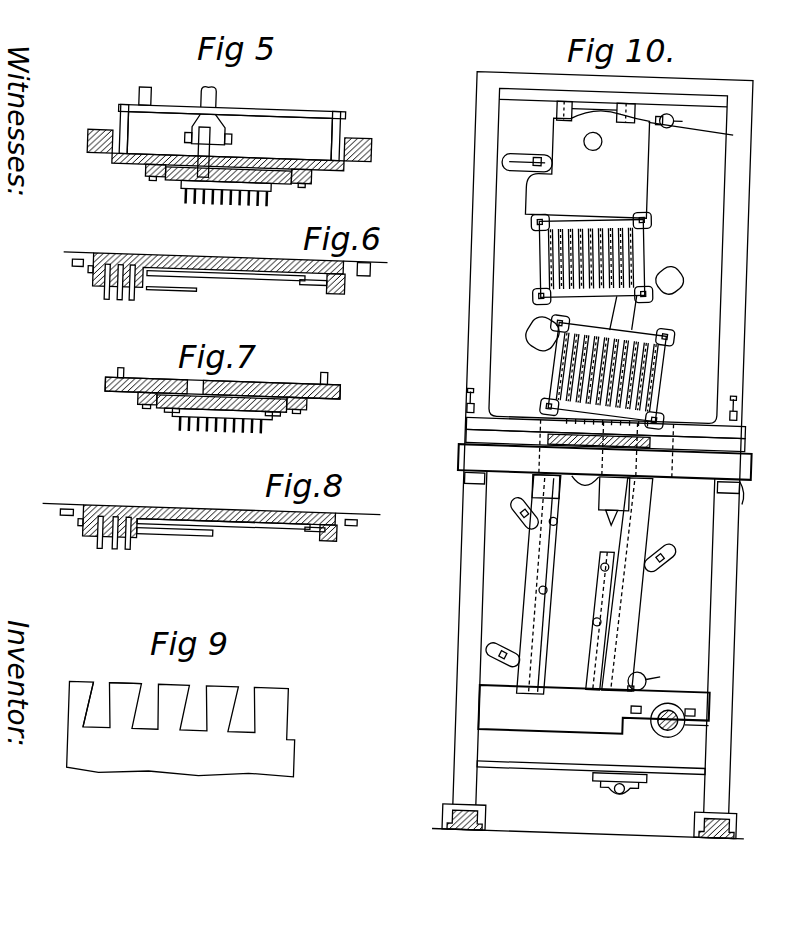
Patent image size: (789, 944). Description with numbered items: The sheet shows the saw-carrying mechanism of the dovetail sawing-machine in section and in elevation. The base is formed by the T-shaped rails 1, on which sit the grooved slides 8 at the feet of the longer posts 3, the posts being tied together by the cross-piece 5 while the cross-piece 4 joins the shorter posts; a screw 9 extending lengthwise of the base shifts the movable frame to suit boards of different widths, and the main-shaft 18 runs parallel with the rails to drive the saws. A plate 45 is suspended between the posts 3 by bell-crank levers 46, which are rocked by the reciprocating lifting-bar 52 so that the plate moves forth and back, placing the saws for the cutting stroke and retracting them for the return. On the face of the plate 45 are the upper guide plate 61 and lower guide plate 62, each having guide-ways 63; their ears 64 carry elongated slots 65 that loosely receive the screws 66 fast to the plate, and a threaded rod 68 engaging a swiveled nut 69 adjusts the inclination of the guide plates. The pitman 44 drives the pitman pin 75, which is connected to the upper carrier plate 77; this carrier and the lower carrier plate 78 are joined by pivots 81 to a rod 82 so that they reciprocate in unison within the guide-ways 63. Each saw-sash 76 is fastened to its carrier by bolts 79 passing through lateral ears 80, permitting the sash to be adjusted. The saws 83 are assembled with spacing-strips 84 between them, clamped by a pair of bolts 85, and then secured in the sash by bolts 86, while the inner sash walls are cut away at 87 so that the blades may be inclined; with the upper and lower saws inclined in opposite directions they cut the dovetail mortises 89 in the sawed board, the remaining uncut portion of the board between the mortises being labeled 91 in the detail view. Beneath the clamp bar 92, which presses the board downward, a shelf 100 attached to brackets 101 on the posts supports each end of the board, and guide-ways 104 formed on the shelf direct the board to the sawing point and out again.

In FIG. 10, the rails 1 is at (470, 832).
In FIG. 5, the longer posts 3 is at (88, 139).
In FIG. 10, the longer posts 3 is at (455, 770).
In FIG. 5, the cross-piece 4 is at (112, 161).
In FIG. 10, the cross-piece 5 is at (522, 772).
In FIG. 10, the grooved slides 8 is at (445, 808).
In FIG. 10, the screw 9 is at (612, 790).
In FIG. 10, the main-shaft 18 is at (690, 720).
In FIG. 5, the pitman 44 is at (218, 92).
In FIG. 7, the plate 45 is at (140, 380).
In FIG. 10, the plate 45 is at (508, 100).
In FIG. 5, the bell-crank levers 46 is at (122, 114).
In FIG. 5, the lifting-bar 52 is at (152, 86).
In FIG. 10, the upper guide plate 61 is at (607, 112).
In FIG. 7, the lower guide plate 62 is at (178, 410).
In FIG. 10, the lower guide plate 62 is at (640, 622).
In FIG. 5, the guide-ways 63 is at (158, 178).
In FIG. 7, the guide-ways 63 is at (138, 398).
In FIG. 10, the guide-ways 63 is at (556, 110).
In FIG. 10, the ears 64 is at (505, 160).
In FIG. 10, the elongated slots 65 is at (520, 165).
In FIG. 10, the screws 66 is at (524, 158).
In FIG. 10, the threaded rod 68 is at (680, 120).
In FIG. 10, the nut 69 is at (672, 125).
In FIG. 5, the pitman pin 75 is at (206, 158).
In FIG. 10, the pitman pin 75 is at (592, 152).
In FIG. 5, the saw-sashes 76 is at (192, 185).
In FIG. 6, the saw-sashes 76 is at (110, 255).
In FIG. 7, the saw-sashes 76 is at (185, 412).
In FIG. 8, the saw-sashes 76 is at (193, 508).
In FIG. 10, the saw-sashes 76 is at (535, 230).
In FIG. 10, the upper carrier plate 77 is at (650, 183).
In FIG. 10, the lower carrier plate 78 is at (667, 370).
In FIG. 8, the bolts 79 is at (351, 528).
In FIG. 6, the lateral ears 80 is at (372, 264).
In FIG. 8, the lateral ears 80 is at (358, 520).
In FIG. 10, the lateral ears 80 is at (650, 212).
In FIG. 10, the pivots 81 is at (630, 240).
In FIG. 10, the rod 82 is at (625, 310).
In FIG. 5, the saws 83 is at (222, 197).
In FIG. 6, the saws 83 is at (105, 293).
In FIG. 7, the saws 83 is at (208, 422).
In FIG. 8, the saws 83 is at (100, 554).
In FIG. 10, the saws 83 is at (560, 258).
In FIG. 6, the spacing-strips 84 is at (122, 292).
In FIG. 8, the spacing-strips 84 is at (135, 542).
In FIG. 6, the bolts 85 is at (151, 290).
In FIG. 8, the bolts 85 is at (207, 540).
In FIG. 6, the bolts 86 is at (208, 281).
In FIG. 8, the bolts 86 is at (217, 525).
In FIG. 6, the cut-away sash walls 87 is at (330, 284).
In FIG. 8, the cut-away sash walls 87 is at (323, 540).
In FIG. 9, the dovetail mortises 89 is at (148, 692).
In FIG. 9, the comb bar 91 is at (178, 762).
In FIG. 10, the comb bar 91 is at (560, 437).
In FIG. 10, the board-clamp 92 is at (690, 420).
In FIG. 10, the shelf 100 is at (752, 482).
In FIG. 10, the brackets 101 is at (720, 483).
In FIG. 10, the guide-ways 104 is at (545, 445).